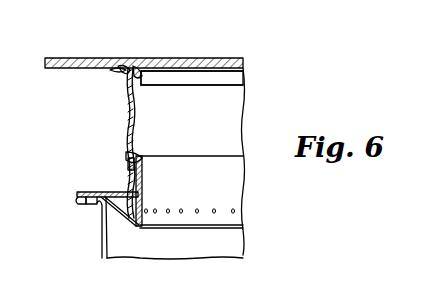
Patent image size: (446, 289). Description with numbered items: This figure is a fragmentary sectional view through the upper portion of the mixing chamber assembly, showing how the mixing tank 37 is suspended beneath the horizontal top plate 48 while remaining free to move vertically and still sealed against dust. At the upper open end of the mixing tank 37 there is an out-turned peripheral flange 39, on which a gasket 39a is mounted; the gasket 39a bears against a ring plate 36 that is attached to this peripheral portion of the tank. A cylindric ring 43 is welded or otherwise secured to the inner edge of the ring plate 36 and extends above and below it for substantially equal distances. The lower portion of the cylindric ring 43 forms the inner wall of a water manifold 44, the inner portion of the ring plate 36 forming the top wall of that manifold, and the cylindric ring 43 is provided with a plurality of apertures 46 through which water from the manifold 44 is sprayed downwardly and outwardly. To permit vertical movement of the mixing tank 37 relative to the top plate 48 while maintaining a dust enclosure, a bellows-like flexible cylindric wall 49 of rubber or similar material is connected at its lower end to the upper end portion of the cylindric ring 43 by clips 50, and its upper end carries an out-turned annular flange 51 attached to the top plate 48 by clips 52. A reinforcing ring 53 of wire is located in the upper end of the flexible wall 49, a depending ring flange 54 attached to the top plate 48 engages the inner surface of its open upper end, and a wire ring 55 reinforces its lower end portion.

The ring plate 36 is at (97, 194).
The mixing tank 37 is at (103, 250).
The out-turned peripheral flange 39 is at (93, 206).
The gasket 39a is at (79, 202).
The cylindric ring 43 is at (144, 180).
The water manifold 44 is at (126, 216).
The apertures 46 is at (146, 210).
The horizontal top plate 48 is at (80, 57).
The bellows-like flexible cylindric wall 49 is at (127, 125).
The clips 50 is at (129, 163).
The out-turned annular flange 51 is at (122, 66).
The clips 52 is at (118, 72).
The reinforcing ring 53 is at (136, 60).
The depending ring flange 54 is at (143, 80).
The wire ring 55 is at (141, 158).